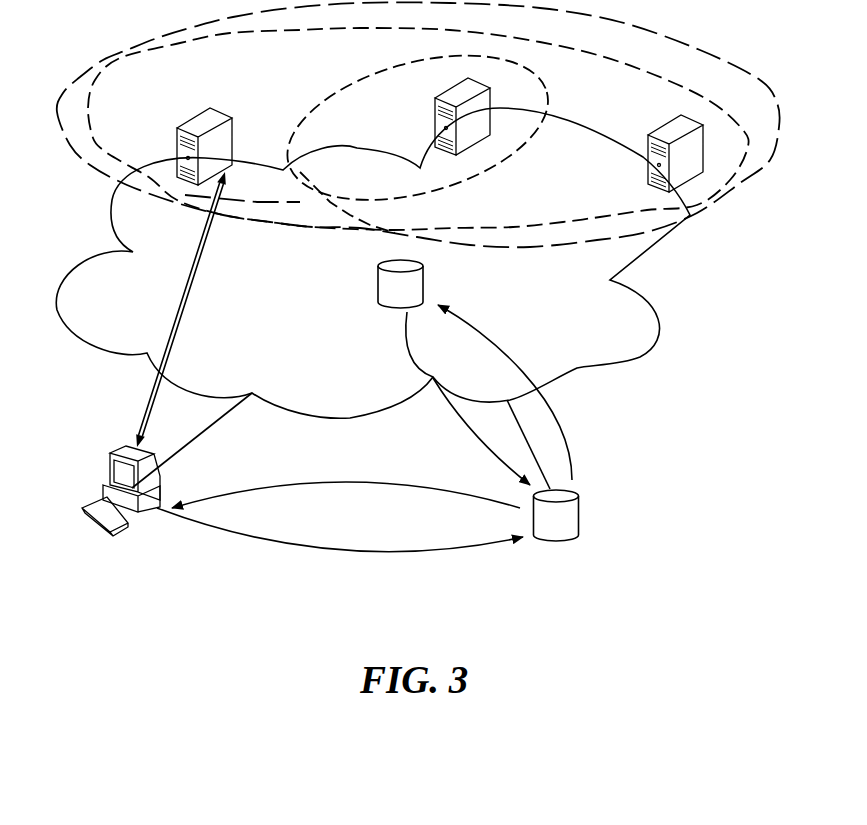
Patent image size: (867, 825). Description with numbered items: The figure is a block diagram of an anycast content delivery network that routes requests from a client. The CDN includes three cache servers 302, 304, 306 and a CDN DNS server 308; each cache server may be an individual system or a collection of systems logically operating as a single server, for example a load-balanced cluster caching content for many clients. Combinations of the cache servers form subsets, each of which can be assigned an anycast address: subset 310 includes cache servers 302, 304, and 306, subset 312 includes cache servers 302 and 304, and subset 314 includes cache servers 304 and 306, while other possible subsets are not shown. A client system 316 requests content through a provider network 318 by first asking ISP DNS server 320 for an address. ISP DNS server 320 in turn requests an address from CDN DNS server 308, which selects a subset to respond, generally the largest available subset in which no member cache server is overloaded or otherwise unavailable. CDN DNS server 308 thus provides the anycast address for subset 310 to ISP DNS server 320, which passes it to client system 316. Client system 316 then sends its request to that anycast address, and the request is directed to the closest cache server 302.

The cache server 302 is at (193, 128).
The cache server 304 is at (452, 100).
The cache server 306 is at (660, 137).
The CDN DNS server 308 is at (423, 280).
The subset 310 is at (93, 180).
The subset 312 is at (224, 33).
The subset 314 is at (697, 207).
The client system 316 is at (155, 473).
The provider network 318 is at (640, 357).
The ISP DNS server 320 is at (578, 508).